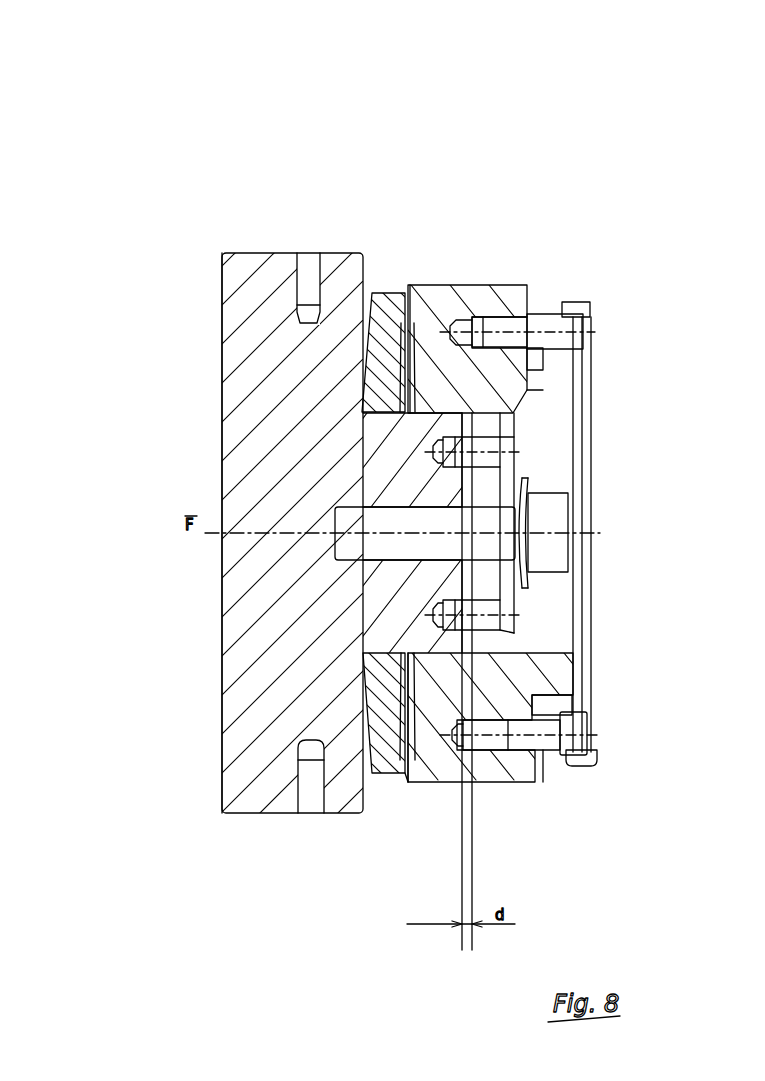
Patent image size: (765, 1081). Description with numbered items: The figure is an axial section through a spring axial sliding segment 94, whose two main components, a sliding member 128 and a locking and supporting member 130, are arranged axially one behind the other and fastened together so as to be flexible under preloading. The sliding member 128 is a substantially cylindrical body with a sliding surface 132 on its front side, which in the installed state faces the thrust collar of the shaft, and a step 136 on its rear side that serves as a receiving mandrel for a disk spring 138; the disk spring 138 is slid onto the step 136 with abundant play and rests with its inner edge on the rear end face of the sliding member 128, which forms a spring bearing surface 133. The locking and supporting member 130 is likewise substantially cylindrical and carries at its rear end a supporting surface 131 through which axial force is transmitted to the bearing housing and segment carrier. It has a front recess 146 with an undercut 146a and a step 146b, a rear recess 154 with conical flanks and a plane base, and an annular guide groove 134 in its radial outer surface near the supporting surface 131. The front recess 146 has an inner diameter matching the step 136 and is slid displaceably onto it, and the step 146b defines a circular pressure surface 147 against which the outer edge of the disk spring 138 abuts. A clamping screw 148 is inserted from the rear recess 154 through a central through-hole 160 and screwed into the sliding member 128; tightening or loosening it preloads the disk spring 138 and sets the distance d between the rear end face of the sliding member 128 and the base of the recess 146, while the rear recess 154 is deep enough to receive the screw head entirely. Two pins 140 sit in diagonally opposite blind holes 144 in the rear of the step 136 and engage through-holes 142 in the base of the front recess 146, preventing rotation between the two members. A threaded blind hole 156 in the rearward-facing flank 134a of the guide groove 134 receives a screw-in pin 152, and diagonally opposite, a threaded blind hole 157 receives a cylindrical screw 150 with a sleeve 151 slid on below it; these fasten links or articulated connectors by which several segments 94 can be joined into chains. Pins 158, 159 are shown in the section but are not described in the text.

The spring axial sliding segment 94 is at (230, 80).
The sliding member 128 is at (285, 498).
The locking and supporting member 130 is at (487, 402).
The supporting surface 131 is at (591, 327).
The sliding surface 132 is at (220, 554).
The spring bearing surface 133 is at (410, 297).
The guide groove 134 is at (544, 367).
The rearward-facing flank 134a is at (533, 300).
The step 136 is at (388, 778).
The disk spring 138 is at (380, 292).
The pins 140 is at (500, 446).
The through-holes 142 is at (512, 442).
The blind holes 144 is at (525, 403).
The front recess 146 is at (508, 592).
The undercut 146a is at (594, 650).
The step 146b is at (415, 765).
The pressure surface 147 is at (400, 780).
The clamping screw 148 is at (540, 542).
The cylindrical screw 150 is at (570, 737).
The sleeve 151 is at (544, 755).
The screw-in pin 152 is at (587, 303).
The rear recess 154 is at (553, 681).
The threaded blind hole 156 is at (464, 318).
The threaded blind hole 157 is at (482, 765).
The upper locating pin 158 is at (311, 253).
The lower locating pin 159 is at (308, 815).
The central through-hole 160 is at (502, 555).